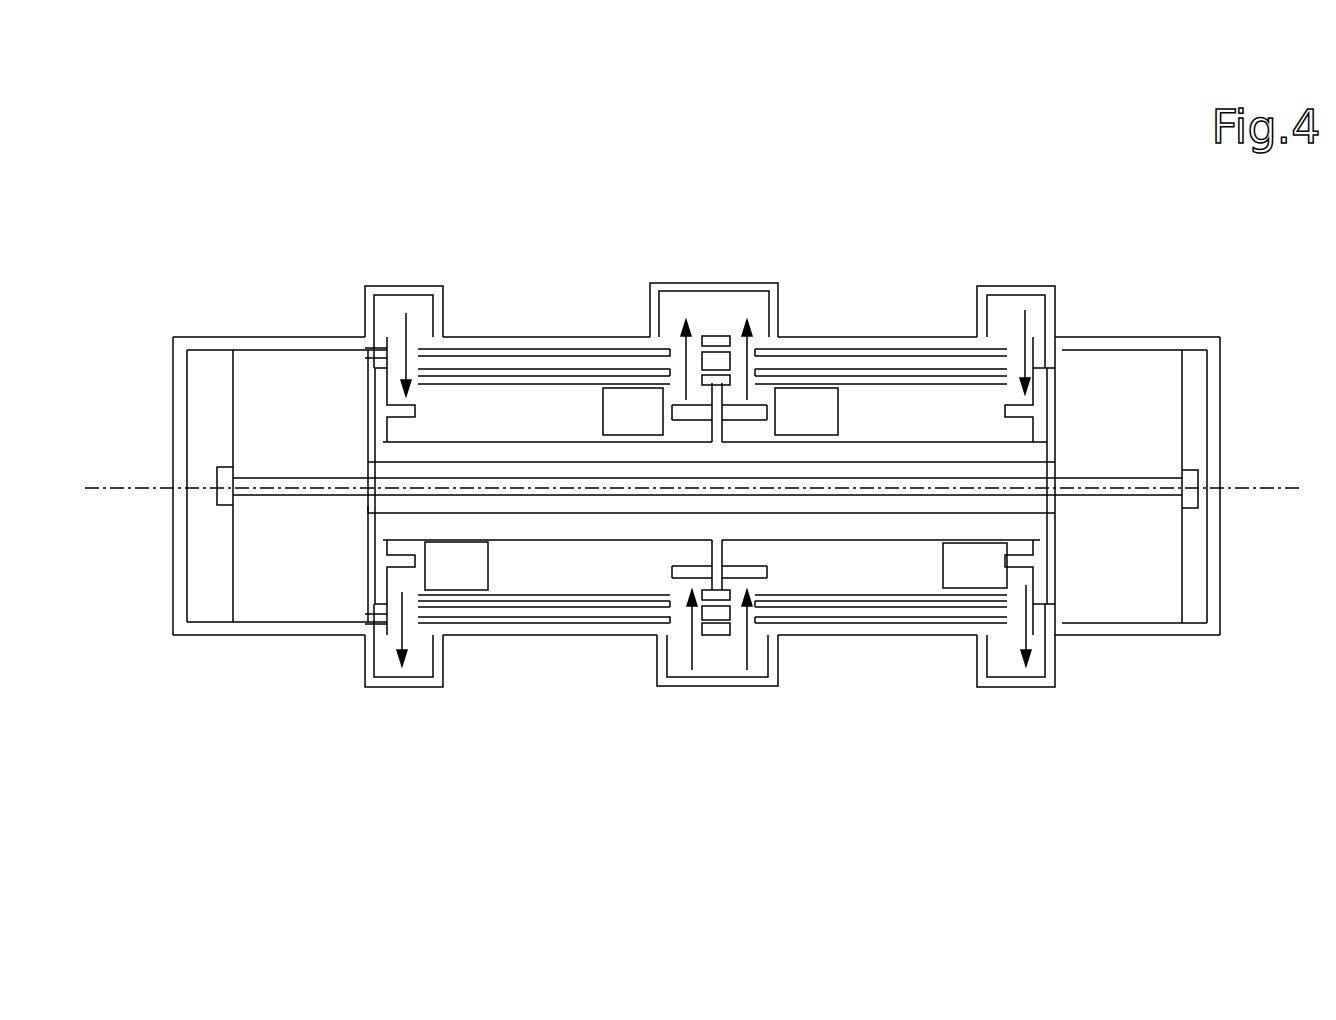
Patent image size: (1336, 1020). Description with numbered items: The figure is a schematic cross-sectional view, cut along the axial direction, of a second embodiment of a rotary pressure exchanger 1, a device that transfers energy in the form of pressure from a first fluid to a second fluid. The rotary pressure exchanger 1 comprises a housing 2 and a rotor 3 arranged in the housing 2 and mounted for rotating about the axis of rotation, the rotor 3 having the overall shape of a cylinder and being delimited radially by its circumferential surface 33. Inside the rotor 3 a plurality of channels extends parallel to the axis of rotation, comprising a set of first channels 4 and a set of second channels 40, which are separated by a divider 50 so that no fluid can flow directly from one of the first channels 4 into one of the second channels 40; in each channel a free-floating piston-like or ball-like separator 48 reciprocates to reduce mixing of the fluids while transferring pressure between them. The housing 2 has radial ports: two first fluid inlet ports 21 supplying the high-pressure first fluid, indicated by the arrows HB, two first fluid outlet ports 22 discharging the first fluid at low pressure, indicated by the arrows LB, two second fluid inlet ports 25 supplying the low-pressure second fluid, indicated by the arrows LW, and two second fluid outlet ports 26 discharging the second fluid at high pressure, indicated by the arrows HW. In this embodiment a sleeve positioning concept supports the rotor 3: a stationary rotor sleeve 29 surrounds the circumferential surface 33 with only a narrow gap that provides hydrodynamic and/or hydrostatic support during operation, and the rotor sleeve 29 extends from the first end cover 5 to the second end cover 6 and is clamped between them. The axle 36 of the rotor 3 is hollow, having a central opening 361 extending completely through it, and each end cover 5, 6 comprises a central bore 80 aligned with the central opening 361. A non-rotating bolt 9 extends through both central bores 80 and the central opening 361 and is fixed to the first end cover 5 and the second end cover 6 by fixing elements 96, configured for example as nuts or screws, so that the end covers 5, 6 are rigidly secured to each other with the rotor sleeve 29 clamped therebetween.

The rotary pressure exchanger 1 is at (1192, 264).
The housing 2 is at (1136, 336).
The rotor 3 is at (552, 378).
The first channels 4 is at (522, 577).
The first end cover 5 is at (303, 380).
The second end cover 6 is at (1173, 390).
The bolt 9 is at (557, 496).
The first fluid inlet ports 21 is at (405, 287).
The first fluid outlet ports 22 is at (421, 688).
The second fluid inlet ports 25 is at (682, 688).
The second fluid outlet ports 26 is at (671, 283).
The rotor sleeve 29 is at (508, 349).
The circumferential surface 33 is at (925, 607).
The axle 36 is at (958, 437).
The second channels 40 is at (907, 403).
The separator 48 is at (822, 400).
The divider 50 is at (712, 546).
The central bore 80 is at (280, 495).
The fixing elements 96 is at (220, 472).
The central opening 361 is at (875, 514).
The arrows HB is at (407, 333).
The arrows HW is at (683, 353).
The arrows LB is at (395, 645).
The arrows LW is at (692, 657).